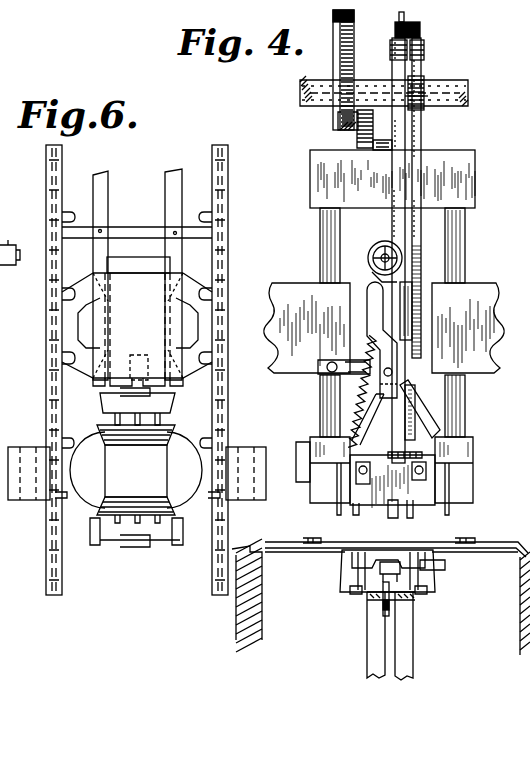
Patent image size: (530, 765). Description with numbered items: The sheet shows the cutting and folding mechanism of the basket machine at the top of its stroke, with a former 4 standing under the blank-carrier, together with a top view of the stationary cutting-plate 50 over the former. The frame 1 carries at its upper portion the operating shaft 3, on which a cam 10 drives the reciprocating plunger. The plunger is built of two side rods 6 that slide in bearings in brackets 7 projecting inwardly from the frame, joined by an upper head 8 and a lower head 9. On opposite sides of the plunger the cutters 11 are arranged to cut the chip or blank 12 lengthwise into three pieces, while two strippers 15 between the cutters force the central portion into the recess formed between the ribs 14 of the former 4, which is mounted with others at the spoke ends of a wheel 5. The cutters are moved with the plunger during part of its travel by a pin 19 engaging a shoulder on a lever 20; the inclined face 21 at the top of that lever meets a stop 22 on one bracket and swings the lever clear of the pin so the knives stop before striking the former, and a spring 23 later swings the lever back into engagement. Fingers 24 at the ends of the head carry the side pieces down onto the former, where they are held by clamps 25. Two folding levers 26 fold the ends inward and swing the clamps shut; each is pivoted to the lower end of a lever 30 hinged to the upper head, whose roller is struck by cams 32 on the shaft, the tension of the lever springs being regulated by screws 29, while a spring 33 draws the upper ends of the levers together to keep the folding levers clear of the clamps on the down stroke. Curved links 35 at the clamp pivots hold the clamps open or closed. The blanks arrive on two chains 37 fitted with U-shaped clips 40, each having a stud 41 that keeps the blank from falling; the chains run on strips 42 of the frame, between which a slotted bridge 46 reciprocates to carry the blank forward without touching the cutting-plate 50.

In FIG. 6, the frame 1 is at (256, 590).
In FIG. 4, the frame 1 is at (522, 590).
In FIG. 4, the operating shaft 3 is at (369, 91).
In FIG. 6, the former 4 is at (94, 468).
In FIG. 4, the former 4 is at (427, 552).
In FIG. 4, the wheel 5 is at (381, 636).
In FIG. 4, the side rods 6 is at (390, 322).
In FIG. 4, the brackets 7 is at (384, 323).
In FIG. 4, the upper head 8 is at (403, 179).
In FIG. 4, the lower head 9 is at (403, 470).
In FIG. 4, the cam 10 is at (354, 67).
In FIG. 4, the cutters 11 is at (436, 495).
In FIG. 6, the blank 12 is at (137, 329).
In FIG. 4, the blank 12 is at (328, 549).
In FIG. 4, the ribs 14 is at (346, 554).
In FIG. 4, the strippers 15 is at (361, 507).
In FIG. 4, the pin 19 is at (394, 451).
In FIG. 4, the lever 20 is at (419, 400).
In FIG. 4, the inclined face 21 is at (375, 343).
In FIG. 4, the stop 22 is at (345, 372).
In FIG. 4, the spring 23 is at (368, 400).
In FIG. 4, the fingers 24 is at (336, 515).
In FIG. 6, the clamps 25 is at (100, 403).
In FIG. 4, the clamps 25 is at (433, 578).
In FIG. 4, the folding levers 26 is at (421, 282).
In FIG. 6, the screws 29 is at (12, 247).
In FIG. 4, the screws 29 is at (370, 260).
In FIG. 4, the lever 30 is at (422, 120).
In FIG. 4, the cams 32 is at (414, 76).
In FIG. 4, the spring 33 is at (407, 20).
In FIG. 4, the curved links 35 is at (382, 604).
In FIG. 6, the chains 37 is at (47, 156).
In FIG. 6, the clips 40 is at (69, 286).
In FIG. 4, the clips 40 is at (396, 540).
In FIG. 6, the stud 41 is at (72, 436).
In FIG. 6, the strips 42 is at (108, 188).
In FIG. 6, the bridge 46 is at (135, 253).
In FIG. 4, the cutting-plate 50 is at (262, 464).